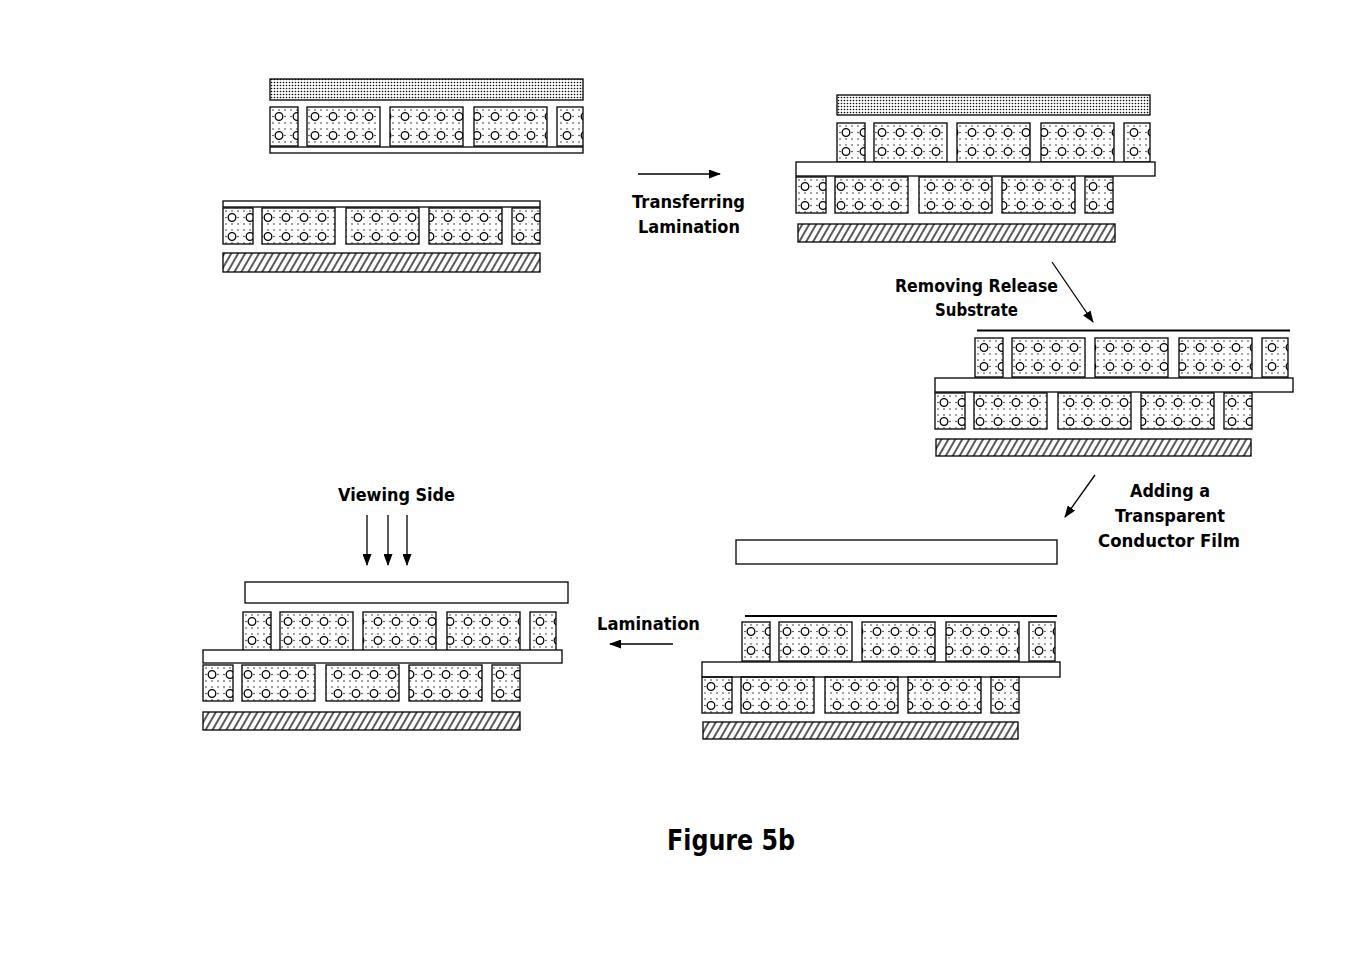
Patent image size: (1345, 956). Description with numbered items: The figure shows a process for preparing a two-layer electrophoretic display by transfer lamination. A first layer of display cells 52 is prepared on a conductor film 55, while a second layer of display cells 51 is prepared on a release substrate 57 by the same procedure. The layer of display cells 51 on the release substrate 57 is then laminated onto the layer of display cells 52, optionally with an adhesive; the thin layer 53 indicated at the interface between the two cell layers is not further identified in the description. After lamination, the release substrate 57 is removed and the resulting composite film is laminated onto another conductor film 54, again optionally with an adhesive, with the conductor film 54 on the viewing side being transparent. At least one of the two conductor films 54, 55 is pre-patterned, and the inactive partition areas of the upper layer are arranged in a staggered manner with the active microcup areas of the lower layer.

The layer of display cells 51 is at (472, 91).
The layer of display cells 52 is at (433, 273).
The adhesive layer 53 is at (272, 149).
The conductor film 54 is at (1055, 558).
The conductor film 55 is at (351, 271).
The release substrate 57 is at (304, 87).